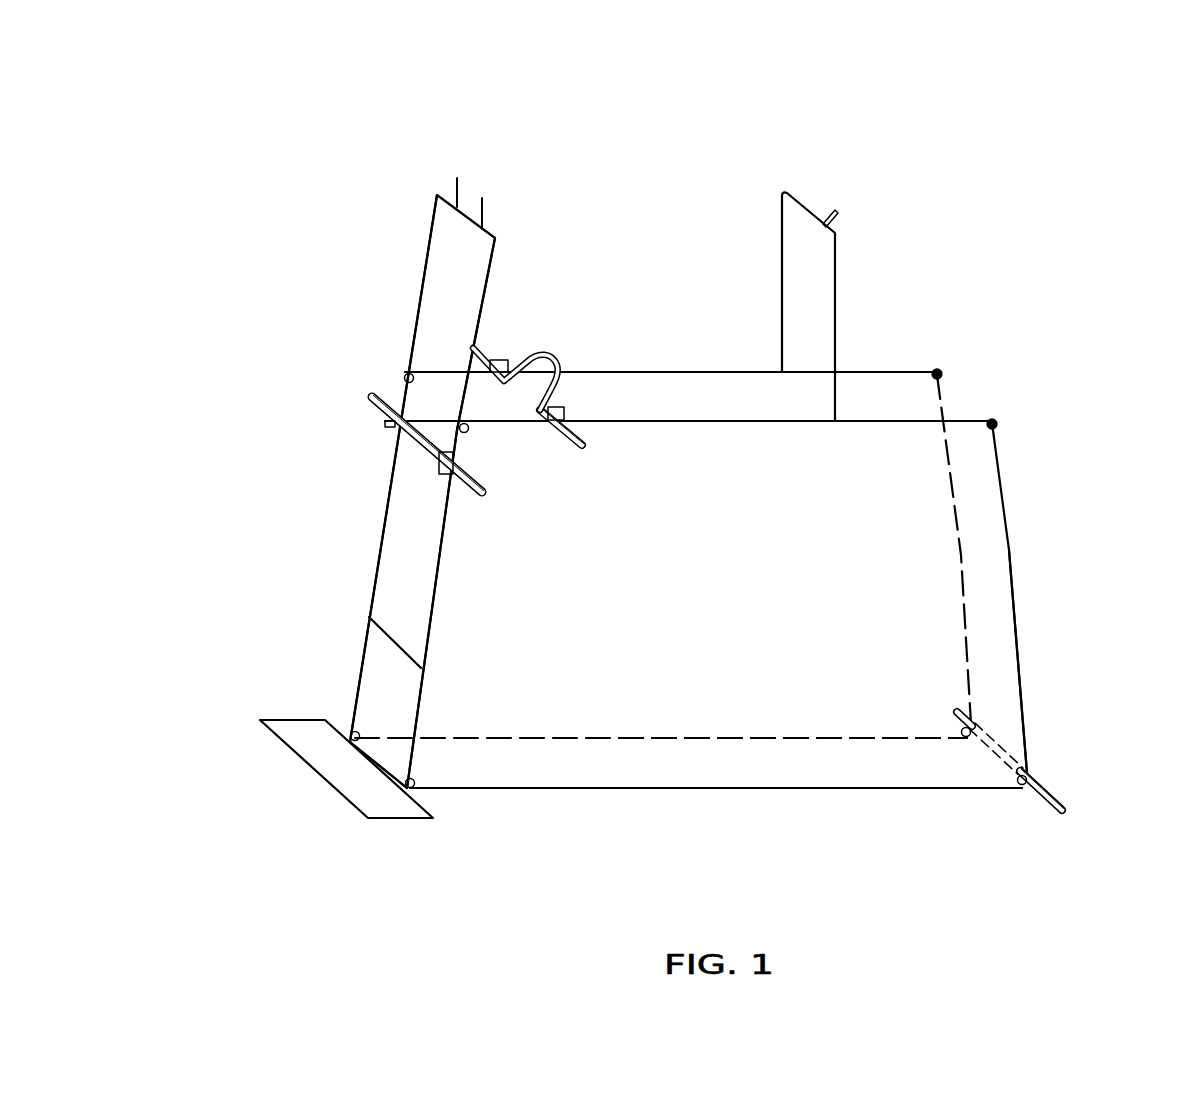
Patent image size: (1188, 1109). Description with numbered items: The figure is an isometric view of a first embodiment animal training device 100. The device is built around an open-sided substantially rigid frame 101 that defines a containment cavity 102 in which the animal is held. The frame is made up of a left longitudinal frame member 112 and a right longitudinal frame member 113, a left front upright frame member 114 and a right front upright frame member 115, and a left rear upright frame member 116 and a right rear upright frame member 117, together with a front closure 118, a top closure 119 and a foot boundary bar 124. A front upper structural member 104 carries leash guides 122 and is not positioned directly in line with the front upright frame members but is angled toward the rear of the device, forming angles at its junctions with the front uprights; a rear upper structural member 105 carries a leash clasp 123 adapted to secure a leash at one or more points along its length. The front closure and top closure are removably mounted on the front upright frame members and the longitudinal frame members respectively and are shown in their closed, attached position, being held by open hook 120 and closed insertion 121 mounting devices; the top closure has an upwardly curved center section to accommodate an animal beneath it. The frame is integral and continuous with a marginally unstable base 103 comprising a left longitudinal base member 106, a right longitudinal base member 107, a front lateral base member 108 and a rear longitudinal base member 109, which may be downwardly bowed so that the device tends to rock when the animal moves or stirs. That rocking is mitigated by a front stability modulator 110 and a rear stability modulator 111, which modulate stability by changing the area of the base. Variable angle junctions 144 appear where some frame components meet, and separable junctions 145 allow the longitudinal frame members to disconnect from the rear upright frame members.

The animal training device 100 is at (651, 148).
The substantially rigid frame 101 is at (1033, 477).
The containment cavity 102 is at (842, 594).
The marginally unstable base 103 is at (533, 807).
The front upper structural member 104 is at (424, 273).
The rear upper structural member 105 is at (835, 262).
The left longitudinal base member 106 is at (838, 739).
The right longitudinal base member 107 is at (720, 788).
The front lateral base member 108 is at (373, 775).
The rear longitudinal base member 109 is at (963, 773).
The front stability modulator 110 is at (263, 730).
The rear stability modulator 111 is at (1060, 798).
The left longitudinal frame member 112 is at (673, 372).
The right longitudinal frame member 113 is at (590, 425).
The left front upright frame member 114 is at (377, 552).
The right front upright frame member 115 is at (430, 637).
The left rear upright frame member 116 is at (966, 648).
The right rear upright frame member 117 is at (1025, 717).
The front closure 118 is at (378, 403).
The top closure 119 is at (476, 346).
The open hook mounting device 120 is at (508, 350).
The closed insertion mounting device 121 is at (565, 413).
The leash guides 122 is at (482, 198).
The leash clasp 123 is at (825, 210).
The foot boundary bar 124 is at (369, 640).
The variable angle junctions 144 is at (461, 428).
The separable junctions 145 is at (1000, 425).